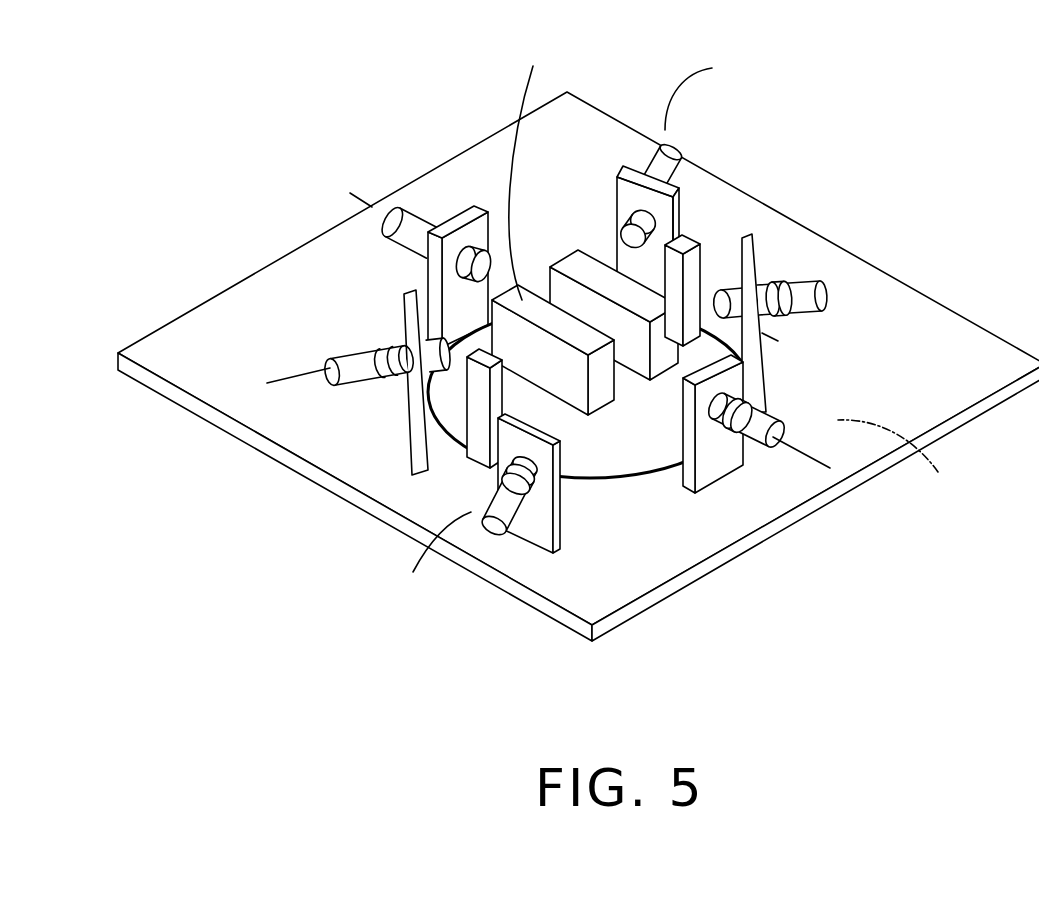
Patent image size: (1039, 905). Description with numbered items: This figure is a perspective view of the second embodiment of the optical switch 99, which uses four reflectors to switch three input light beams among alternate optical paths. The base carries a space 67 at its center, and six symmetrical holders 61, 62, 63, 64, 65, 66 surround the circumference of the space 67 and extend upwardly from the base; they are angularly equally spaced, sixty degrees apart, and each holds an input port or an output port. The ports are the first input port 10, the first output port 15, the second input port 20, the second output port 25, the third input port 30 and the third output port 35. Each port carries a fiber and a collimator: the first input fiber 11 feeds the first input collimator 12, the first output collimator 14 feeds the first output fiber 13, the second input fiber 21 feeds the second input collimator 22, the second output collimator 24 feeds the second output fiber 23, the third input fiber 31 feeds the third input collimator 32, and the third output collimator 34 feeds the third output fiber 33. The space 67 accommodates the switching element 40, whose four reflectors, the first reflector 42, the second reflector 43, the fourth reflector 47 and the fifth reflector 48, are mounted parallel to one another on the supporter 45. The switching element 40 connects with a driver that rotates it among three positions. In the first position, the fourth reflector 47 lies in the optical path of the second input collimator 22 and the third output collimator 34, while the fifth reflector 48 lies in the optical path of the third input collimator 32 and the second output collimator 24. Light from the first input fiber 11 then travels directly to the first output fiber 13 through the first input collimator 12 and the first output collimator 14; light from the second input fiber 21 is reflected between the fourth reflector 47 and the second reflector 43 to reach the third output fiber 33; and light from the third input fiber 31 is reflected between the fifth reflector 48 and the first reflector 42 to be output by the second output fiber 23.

The first input port 10 is at (902, 452).
The first input fiber 11 is at (803, 453).
The first input collimator 12 is at (748, 396).
The first output fiber 13 is at (368, 200).
The first output collimator 14 is at (433, 222).
The first output port 15 is at (397, 197).
The second input port 20 is at (268, 323).
The second input fiber 21 is at (305, 373).
The second input collimator 22 is at (393, 348).
The second output fiber 23 is at (830, 292).
The second output collimator 24 is at (806, 279).
The second output port 25 is at (825, 290).
The third input port 30 is at (712, 90).
The third input fiber 31 is at (675, 142).
The third input collimator 32 is at (633, 218).
The third output fiber 33 is at (492, 530).
The third output collimator 34 is at (532, 475).
The third output port 35 is at (433, 561).
The switching element 40 is at (533, 166).
The first reflector 42 is at (690, 247).
The second reflector 43 is at (483, 393).
The supporter 45 is at (600, 408).
The fourth reflector 47 is at (607, 443).
The fifth reflector 48 is at (572, 268).
The holder 61 is at (543, 537).
The holder 62 is at (723, 467).
The holder 63 is at (820, 323).
The holder 64 is at (632, 178).
The holder 65 is at (480, 207).
The holder 66 is at (408, 412).
The space 67 is at (657, 466).
The optical switch 99 is at (998, 148).